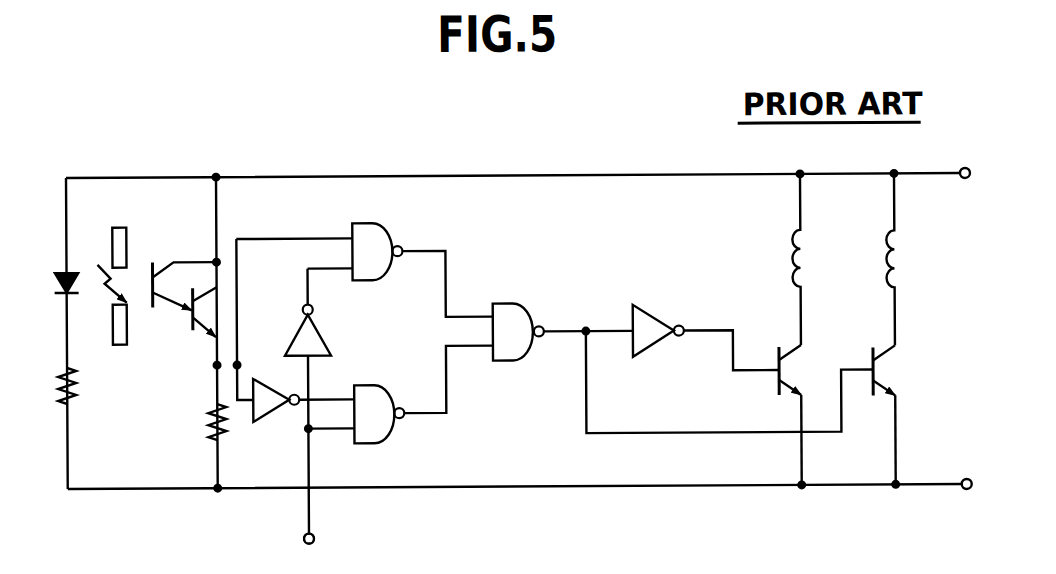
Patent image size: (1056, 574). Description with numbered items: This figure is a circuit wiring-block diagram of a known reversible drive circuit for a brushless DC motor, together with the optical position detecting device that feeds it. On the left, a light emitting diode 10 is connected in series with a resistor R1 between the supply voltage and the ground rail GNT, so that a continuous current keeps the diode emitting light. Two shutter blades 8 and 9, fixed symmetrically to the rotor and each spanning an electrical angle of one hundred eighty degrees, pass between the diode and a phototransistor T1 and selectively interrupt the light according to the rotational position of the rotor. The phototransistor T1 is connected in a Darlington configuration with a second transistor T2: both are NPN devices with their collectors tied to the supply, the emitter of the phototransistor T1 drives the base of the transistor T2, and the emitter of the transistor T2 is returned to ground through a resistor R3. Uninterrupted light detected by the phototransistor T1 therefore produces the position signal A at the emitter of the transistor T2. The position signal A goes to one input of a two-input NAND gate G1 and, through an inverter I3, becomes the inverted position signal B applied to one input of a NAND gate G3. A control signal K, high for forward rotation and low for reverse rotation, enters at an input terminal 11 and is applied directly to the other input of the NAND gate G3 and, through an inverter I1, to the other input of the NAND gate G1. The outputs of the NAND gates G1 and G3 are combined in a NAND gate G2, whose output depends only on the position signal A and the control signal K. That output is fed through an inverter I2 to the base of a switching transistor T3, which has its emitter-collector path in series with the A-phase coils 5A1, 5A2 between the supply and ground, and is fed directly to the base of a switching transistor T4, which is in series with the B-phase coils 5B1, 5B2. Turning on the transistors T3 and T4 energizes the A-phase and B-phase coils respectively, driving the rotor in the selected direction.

The shutter blade 8 is at (118, 232).
The shutter blade 9 is at (114, 342).
The light emitting diode 10 is at (60, 282).
The input terminal 11 is at (303, 544).
The phototransistor T1 is at (157, 284).
The second transistor T2 is at (196, 313).
The switching transistor T3 is at (788, 368).
The switching transistor T4 is at (878, 375).
The resistor R1 is at (61, 386).
The resistor R3 is at (211, 424).
The NAND gate G1 is at (375, 242).
The NAND gate G2 is at (510, 321).
The NAND gate G3 is at (382, 421).
The inverter I1 is at (321, 344).
The inverter I2 is at (648, 325).
The inverter I3 is at (263, 408).
The control signal K is at (308, 508).
The position signal A is at (214, 347).
The inverted position signal B is at (447, 281).
The A-phase coil 5A1 is at (742, 260).
The A-phase coil 5A2 is at (795, 269).
The B-phase coil 5B1 is at (959, 259).
The B-phase coil 5B2 is at (905, 262).
The ground terminal GNT is at (1004, 485).